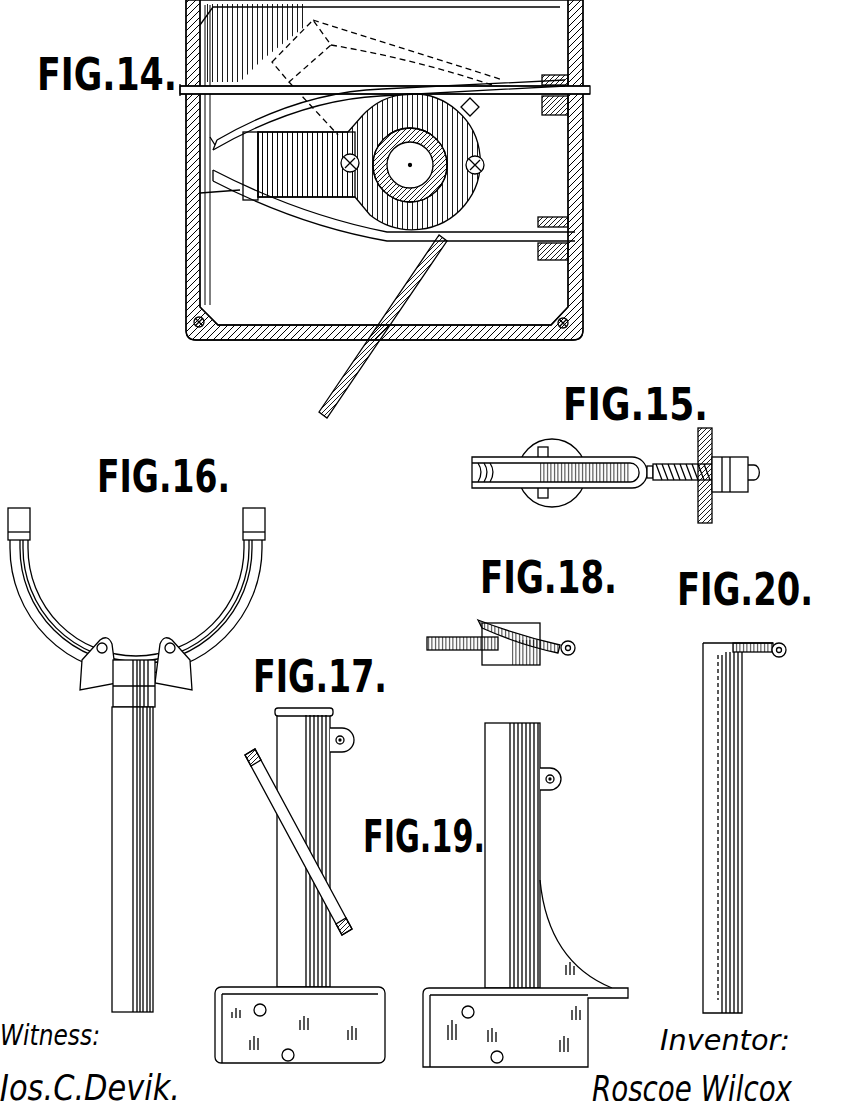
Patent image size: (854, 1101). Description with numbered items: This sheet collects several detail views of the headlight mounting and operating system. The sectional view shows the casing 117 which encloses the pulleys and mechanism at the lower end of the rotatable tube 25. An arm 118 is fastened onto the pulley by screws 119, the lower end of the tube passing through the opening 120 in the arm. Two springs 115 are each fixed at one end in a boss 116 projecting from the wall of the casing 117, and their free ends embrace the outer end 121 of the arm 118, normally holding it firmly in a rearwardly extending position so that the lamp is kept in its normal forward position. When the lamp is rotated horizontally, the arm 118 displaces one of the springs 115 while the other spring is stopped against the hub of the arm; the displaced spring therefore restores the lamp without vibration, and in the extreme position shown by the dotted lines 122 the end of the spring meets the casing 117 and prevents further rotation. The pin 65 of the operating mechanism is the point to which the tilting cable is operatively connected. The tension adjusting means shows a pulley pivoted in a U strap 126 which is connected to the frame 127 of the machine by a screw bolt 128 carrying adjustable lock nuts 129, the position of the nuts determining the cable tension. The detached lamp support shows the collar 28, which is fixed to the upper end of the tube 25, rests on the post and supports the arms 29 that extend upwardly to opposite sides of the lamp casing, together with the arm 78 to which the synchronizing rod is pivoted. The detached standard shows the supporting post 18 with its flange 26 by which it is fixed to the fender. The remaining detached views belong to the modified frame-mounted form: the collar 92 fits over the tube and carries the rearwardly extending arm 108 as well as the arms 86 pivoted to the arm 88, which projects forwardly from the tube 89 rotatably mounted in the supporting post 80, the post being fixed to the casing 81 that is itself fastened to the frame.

In FIG. 14, the casing 117 is at (578, 44).
In FIG. 17, the casing 117 is at (365, 1002).
In FIG. 14, the dotted-line position of displaced spring 122 is at (398, 46).
In FIG. 14, the boss 116 is at (583, 72).
In FIG. 14, the arm 118 is at (322, 200).
In FIG. 14, the screws 119 is at (341, 162).
In FIG. 14, the springs 115 is at (232, 138).
In FIG. 14, the opening 120 is at (440, 246).
In FIG. 14, the pin 65 is at (478, 102).
In FIG. 14, the outer end of arm 121 is at (200, 193).
In FIG. 15, the U strap 126 is at (606, 490).
In FIG. 15, the screw bolt 128 is at (670, 483).
In FIG. 15, the frame 127 is at (712, 520).
In FIG. 15, the adjustable lock nuts 129 is at (725, 460).
In FIG. 16, the arms 29 is at (240, 628).
In FIG. 16, the arm 78 is at (130, 680).
In FIG. 16, the collar 28 is at (158, 700).
In FIG. 16, the tube 25 is at (140, 855).
In FIG. 17, the supporting post 18 is at (320, 790).
In FIG. 17, the flange 26 is at (340, 902).
In FIG. 18, the collar 92 is at (487, 652).
In FIG. 18, the arm 108 is at (475, 640).
In FIG. 18, the arms 86 is at (558, 656).
In FIG. 19, the supporting standard or post 80 is at (525, 858).
In FIG. 19, the casing 81 is at (525, 1027).
In FIG. 20, the tube 89 is at (728, 815).
In FIG. 20, the arm 88 is at (752, 645).